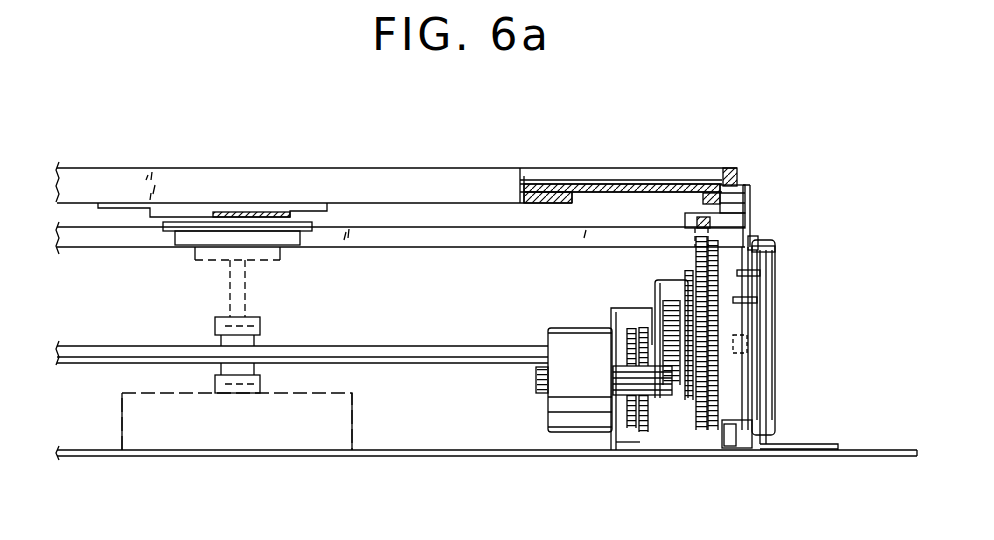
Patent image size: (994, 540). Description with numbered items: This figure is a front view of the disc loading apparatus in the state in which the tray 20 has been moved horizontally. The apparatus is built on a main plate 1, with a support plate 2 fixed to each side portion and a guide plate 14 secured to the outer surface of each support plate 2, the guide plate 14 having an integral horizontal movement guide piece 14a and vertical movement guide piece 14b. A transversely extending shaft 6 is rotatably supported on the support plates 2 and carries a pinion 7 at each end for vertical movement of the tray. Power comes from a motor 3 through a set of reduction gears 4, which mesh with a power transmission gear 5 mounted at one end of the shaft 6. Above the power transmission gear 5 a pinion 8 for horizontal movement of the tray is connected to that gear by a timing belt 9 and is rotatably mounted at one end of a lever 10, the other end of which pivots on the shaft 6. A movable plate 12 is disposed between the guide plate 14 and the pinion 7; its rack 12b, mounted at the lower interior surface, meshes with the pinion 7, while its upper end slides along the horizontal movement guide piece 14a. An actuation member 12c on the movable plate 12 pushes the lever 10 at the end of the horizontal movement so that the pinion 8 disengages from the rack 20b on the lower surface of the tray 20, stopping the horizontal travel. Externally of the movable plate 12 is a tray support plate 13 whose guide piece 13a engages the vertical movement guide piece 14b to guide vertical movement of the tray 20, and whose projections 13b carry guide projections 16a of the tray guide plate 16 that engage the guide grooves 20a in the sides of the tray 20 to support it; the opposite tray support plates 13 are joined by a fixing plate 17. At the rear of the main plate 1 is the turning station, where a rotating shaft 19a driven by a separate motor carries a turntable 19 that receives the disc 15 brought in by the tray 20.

The main plate 1 is at (430, 456).
The support plate 2 is at (625, 446).
The motor 3 is at (562, 435).
The reduction gear 4 is at (645, 325).
The power transmission gear 5 is at (702, 425).
The shaft 6 is at (418, 365).
The pinion 7 is at (730, 368).
The pinion 8 is at (757, 238).
The timing belt 9 is at (692, 432).
The lever 10 is at (655, 262).
The movable plate 12 is at (738, 402).
The rack 12b is at (733, 420).
The actuation member 12c is at (753, 302).
The tray support plate 13 is at (757, 265).
The guide piece 13a is at (763, 247).
The projection 13b is at (750, 358).
The guide plate 14 is at (763, 422).
The horizontal movement guide piece 14a is at (753, 295).
The vertical movement guide piece 14b is at (770, 417).
The disc 15 is at (541, 178).
The tray guide plate 16 is at (752, 188).
The guide projection 16a is at (742, 190).
The fixing plate 17 is at (455, 249).
The turntable 19 is at (206, 237).
The rotating shaft 19a is at (225, 292).
The tray 20 is at (433, 167).
The guide groove 20a is at (718, 192).
The rack 20b is at (700, 228).